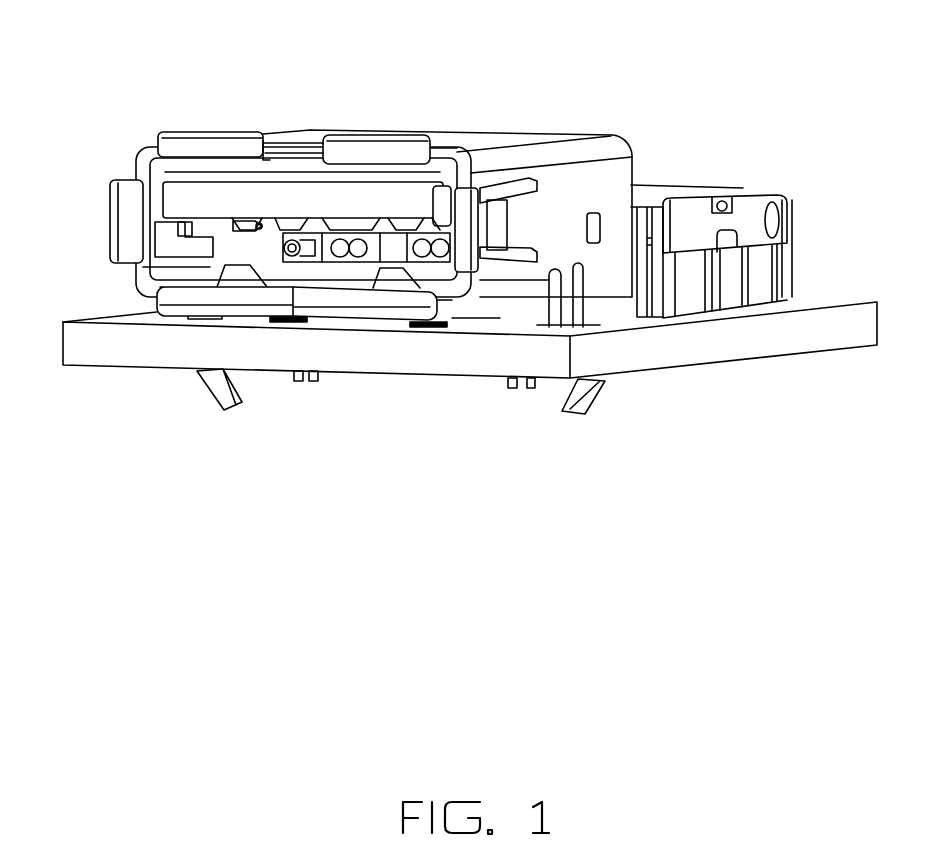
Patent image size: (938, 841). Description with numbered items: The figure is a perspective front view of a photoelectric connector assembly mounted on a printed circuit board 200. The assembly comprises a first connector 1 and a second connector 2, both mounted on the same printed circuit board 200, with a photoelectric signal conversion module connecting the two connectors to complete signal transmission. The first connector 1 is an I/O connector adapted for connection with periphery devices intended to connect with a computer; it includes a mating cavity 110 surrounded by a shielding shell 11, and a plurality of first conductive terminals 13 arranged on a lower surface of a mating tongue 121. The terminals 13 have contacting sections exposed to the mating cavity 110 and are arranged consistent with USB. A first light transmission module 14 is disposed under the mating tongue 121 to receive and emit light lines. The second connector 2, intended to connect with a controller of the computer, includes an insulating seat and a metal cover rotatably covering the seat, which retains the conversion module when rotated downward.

The first connector 1 is at (589, 150).
The shielding shell 11 is at (485, 182).
The mating cavity 110 is at (247, 250).
The mating tongue 121 is at (360, 203).
The first conductive terminals 13 is at (242, 224).
The first light transmission module 14 is at (448, 263).
The second connector 2 is at (757, 223).
The printed circuit board 200 is at (760, 340).